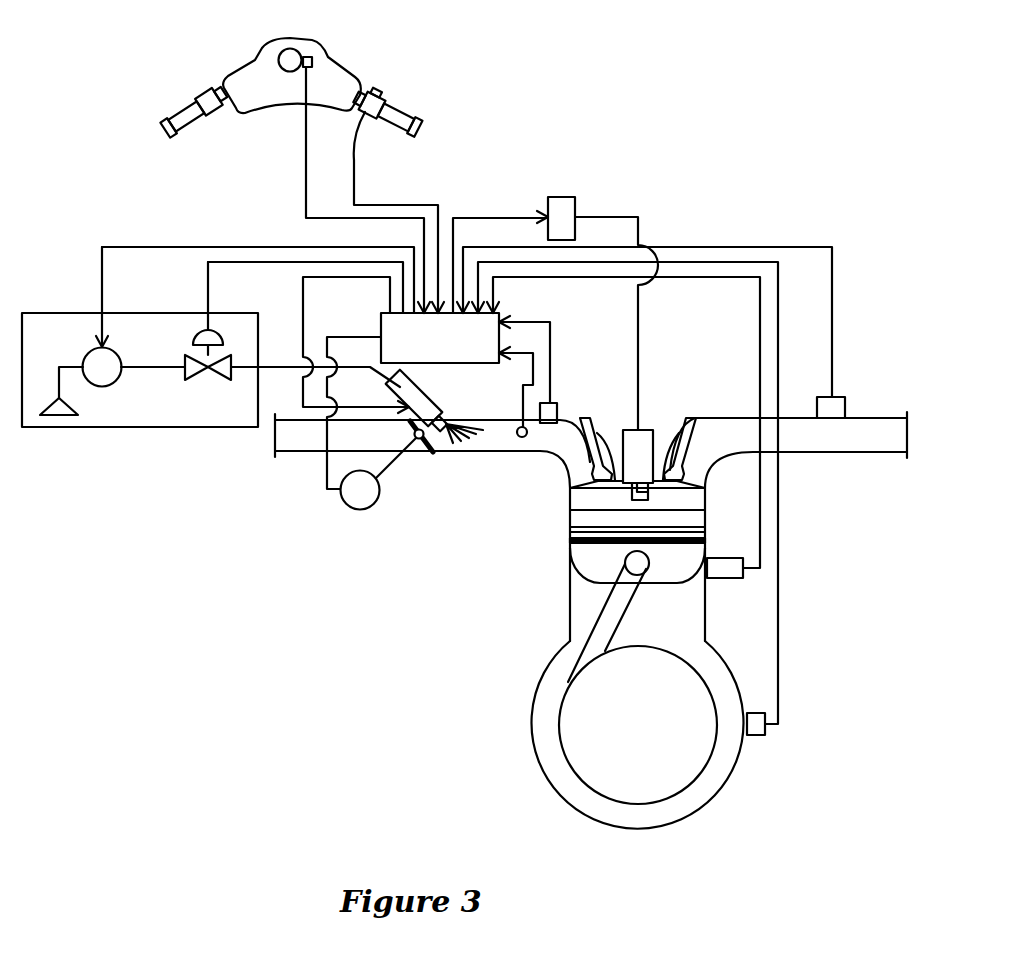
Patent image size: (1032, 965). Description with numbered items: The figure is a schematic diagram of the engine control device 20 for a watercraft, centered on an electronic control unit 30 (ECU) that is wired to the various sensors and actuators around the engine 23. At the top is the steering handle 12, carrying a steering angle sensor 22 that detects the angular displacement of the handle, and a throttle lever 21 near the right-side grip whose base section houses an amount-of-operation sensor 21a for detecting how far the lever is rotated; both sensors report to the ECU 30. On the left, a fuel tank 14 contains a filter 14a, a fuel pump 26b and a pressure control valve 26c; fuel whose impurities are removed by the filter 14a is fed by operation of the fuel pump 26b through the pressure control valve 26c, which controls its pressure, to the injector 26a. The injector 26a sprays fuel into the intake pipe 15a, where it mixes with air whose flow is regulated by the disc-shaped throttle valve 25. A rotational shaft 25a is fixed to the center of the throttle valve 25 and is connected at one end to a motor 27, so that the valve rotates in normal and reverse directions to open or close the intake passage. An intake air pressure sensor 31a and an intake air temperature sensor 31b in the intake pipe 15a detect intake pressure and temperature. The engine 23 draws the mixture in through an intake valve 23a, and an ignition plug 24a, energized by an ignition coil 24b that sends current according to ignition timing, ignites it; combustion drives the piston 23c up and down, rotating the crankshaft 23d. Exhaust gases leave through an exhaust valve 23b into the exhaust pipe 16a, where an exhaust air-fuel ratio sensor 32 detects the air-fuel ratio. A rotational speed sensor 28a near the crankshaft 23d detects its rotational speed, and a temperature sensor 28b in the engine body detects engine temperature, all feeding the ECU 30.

The steering handle 12 is at (234, 55).
The steering angle sensor 22 is at (308, 55).
The throttle lever 21 is at (385, 92).
The amount-of-operation sensor 21a is at (378, 86).
The engine control device 20 is at (549, 123).
The ignition coil 24b is at (565, 197).
The electronic control unit 30 is at (518, 313).
The fuel tank 14 is at (218, 361).
The fuel pump 26b is at (103, 387).
The pressure control valve 26c is at (219, 386).
The filter 14a is at (55, 427).
The injector 26a is at (424, 393).
The intake pipe 15a is at (472, 452).
The throttle valve 25 is at (430, 455).
The rotational shaft 25a is at (418, 440).
The motor 27 is at (361, 510).
The intake air pressure sensor 31a is at (522, 452).
The intake air temperature sensor 31b is at (560, 410).
The engine 23 is at (593, 612).
The intake valve 23a is at (594, 398).
The exhaust valve 23b is at (697, 418).
The ignition plug 24a is at (648, 428).
The piston 23c is at (612, 560).
The crankshaft 23d is at (681, 792).
The exhaust pipe 16a is at (880, 452).
The exhaust air-fuel ratio sensor 32 is at (846, 400).
The rotational speed sensor 28a is at (757, 735).
The temperature sensor 28b is at (727, 578).